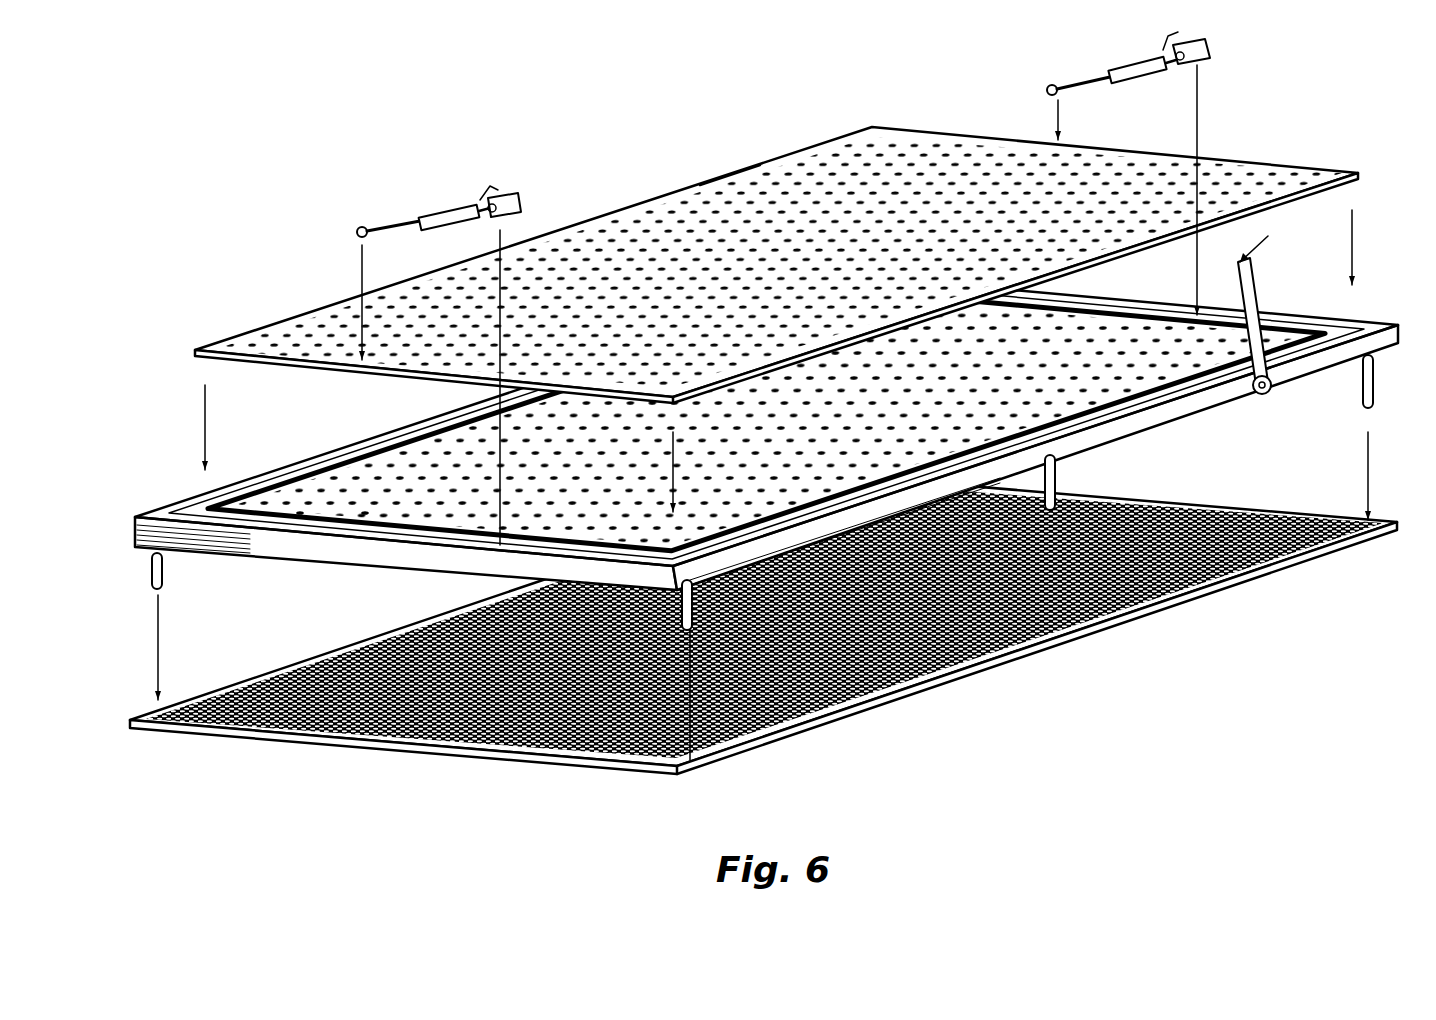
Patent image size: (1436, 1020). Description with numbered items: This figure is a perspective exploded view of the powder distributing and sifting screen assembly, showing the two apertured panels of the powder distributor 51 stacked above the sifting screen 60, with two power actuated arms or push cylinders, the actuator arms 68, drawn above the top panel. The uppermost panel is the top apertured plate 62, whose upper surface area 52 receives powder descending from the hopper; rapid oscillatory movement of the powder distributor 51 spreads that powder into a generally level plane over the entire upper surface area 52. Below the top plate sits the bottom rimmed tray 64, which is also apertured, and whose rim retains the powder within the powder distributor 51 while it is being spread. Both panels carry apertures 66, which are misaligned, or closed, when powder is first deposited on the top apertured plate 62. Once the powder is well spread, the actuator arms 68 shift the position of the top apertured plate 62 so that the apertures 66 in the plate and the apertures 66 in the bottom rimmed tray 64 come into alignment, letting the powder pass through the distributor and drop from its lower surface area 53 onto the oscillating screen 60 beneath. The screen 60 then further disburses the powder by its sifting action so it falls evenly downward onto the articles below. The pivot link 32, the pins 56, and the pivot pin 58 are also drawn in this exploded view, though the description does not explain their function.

The pivot link 32 is at (1256, 280).
The powder distributor 51 is at (250, 283).
The upper surface area 52 is at (1240, 176).
The lower surface area 53 is at (370, 475).
The locating pins 56 is at (150, 568).
The pivot pin 58 is at (1252, 400).
The screen 60 is at (1160, 610).
The top apertured plate 62 is at (733, 178).
The bottom rimmed tray 64 is at (178, 500).
The apertures 66 is at (362, 518).
The actuator arms 68 is at (465, 200).